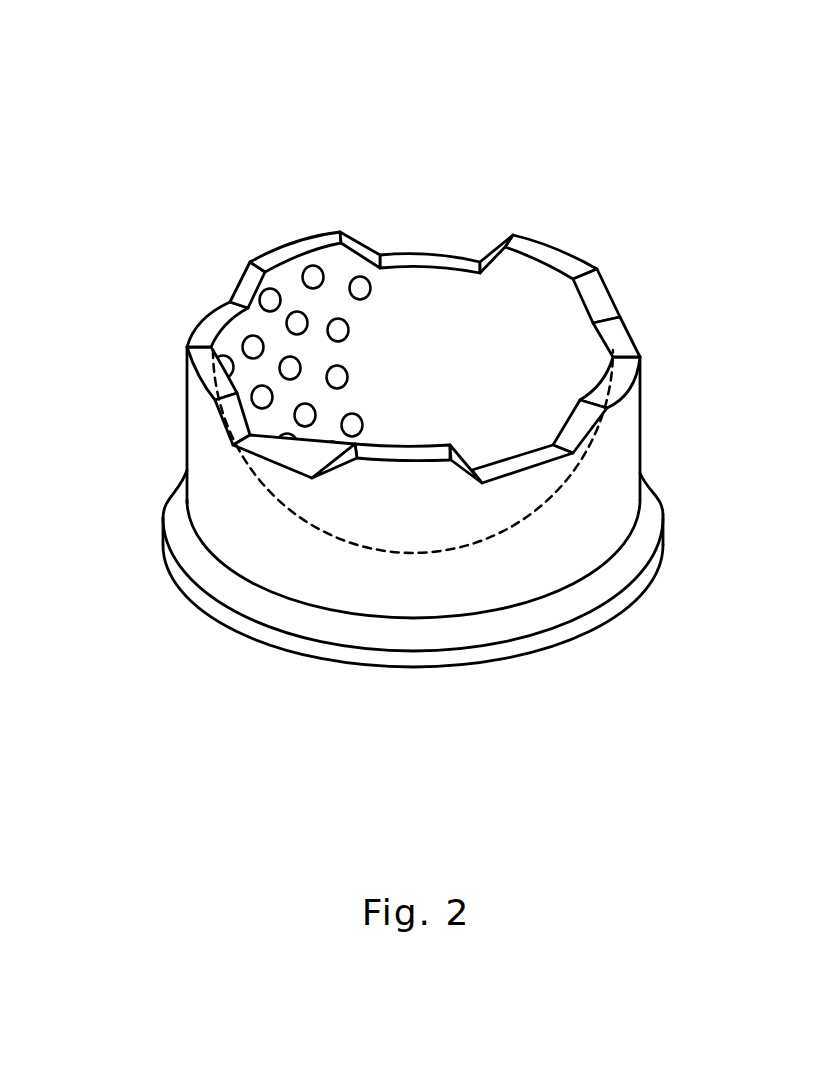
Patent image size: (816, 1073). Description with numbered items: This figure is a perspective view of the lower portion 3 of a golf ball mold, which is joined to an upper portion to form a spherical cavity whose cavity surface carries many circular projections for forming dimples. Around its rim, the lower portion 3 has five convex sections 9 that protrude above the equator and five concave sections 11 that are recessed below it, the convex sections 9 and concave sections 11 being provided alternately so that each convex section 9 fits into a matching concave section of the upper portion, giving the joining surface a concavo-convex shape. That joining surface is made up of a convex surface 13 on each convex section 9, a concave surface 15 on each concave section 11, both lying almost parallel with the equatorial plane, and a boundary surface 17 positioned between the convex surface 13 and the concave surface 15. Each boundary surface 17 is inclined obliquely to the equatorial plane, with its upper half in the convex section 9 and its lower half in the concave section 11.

The lower portion 3 is at (704, 57).
The convex section 9 is at (288, 237).
The concave section 11 is at (432, 245).
The convex surface 13 is at (203, 363).
The concave surface 15 is at (620, 342).
The boundary surface 17 is at (253, 287).